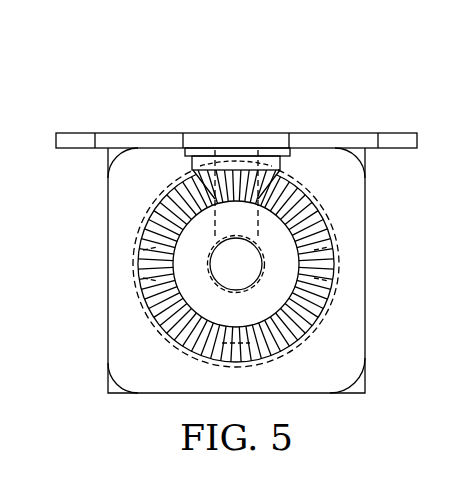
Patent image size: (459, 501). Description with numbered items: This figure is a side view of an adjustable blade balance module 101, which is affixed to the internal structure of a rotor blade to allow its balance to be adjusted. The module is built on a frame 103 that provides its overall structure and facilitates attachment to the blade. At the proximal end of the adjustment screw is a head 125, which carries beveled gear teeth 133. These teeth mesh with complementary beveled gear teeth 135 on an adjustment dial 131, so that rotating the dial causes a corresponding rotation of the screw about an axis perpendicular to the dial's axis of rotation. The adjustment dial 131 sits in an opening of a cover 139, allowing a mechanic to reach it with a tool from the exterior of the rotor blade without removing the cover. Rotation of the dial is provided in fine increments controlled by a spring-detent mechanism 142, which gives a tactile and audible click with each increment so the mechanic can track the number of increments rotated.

The adjustable blade balance module 101 is at (68, 97).
The frame 103 is at (365, 340).
The head 125 is at (156, 324).
The adjustment dial 131 is at (186, 156).
The beveled gear teeth 133 is at (152, 263).
The beveled gear teeth 135 is at (166, 202).
The cover 139 is at (327, 133).
The spring-detent mechanism 142 is at (243, 160).